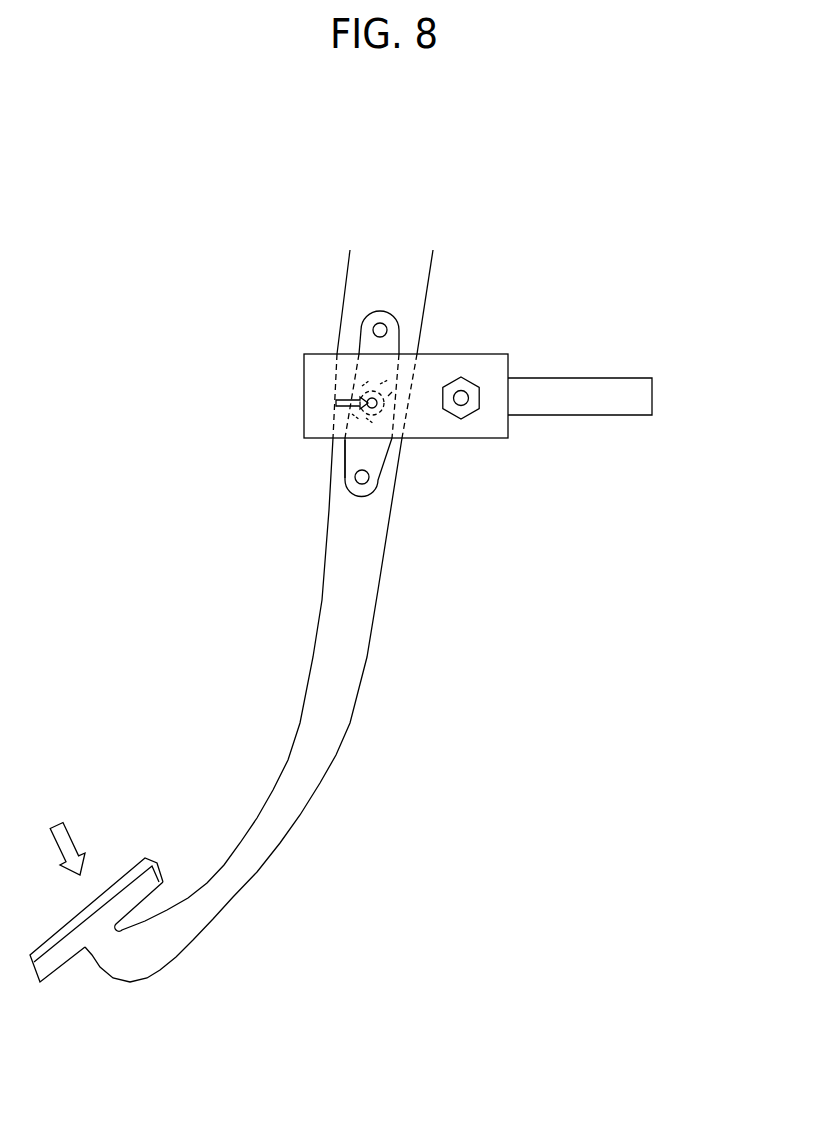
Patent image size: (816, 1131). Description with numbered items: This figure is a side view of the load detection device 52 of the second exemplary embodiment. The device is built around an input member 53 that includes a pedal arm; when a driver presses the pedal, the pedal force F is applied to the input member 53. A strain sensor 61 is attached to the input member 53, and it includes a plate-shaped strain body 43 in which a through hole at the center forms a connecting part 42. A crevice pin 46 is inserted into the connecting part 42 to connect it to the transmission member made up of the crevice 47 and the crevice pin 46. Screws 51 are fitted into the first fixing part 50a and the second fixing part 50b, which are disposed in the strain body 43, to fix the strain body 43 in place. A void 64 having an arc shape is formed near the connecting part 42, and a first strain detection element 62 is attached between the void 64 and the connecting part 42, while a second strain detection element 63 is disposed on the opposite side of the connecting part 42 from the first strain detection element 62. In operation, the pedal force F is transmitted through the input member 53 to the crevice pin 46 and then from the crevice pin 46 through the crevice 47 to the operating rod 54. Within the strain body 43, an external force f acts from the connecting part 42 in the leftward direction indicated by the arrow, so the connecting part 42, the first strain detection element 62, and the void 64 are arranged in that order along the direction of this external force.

The load detection device 52 is at (173, 225).
The input member 53 is at (297, 770).
The crevice 47 is at (490, 415).
The operating rod 54 is at (563, 405).
The screws 51 is at (466, 408).
The strain sensor 61 is at (365, 500).
The first fixing part 50a is at (375, 322).
The second fixing part 50b is at (360, 478).
The strain body 43 is at (348, 453).
The crevice pin 46 is at (365, 395).
The connecting part 42 is at (372, 403).
The void 64 is at (357, 393).
The first strain detection element 62 is at (340, 409).
The second strain detection element 63 is at (388, 396).
The external force f is at (338, 401).
The pedal force F is at (78, 845).